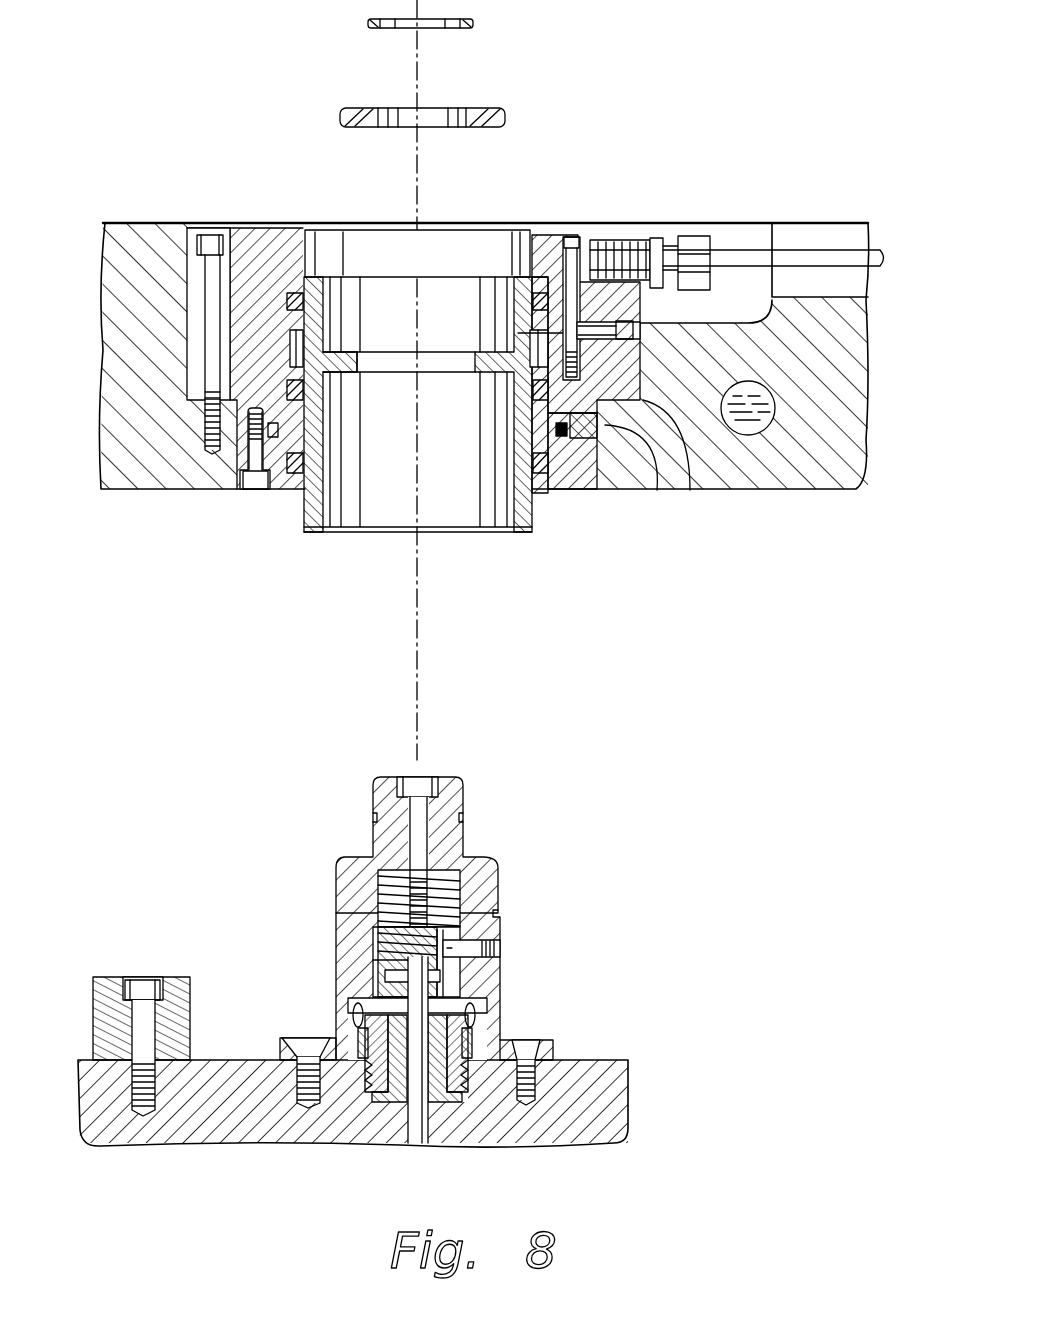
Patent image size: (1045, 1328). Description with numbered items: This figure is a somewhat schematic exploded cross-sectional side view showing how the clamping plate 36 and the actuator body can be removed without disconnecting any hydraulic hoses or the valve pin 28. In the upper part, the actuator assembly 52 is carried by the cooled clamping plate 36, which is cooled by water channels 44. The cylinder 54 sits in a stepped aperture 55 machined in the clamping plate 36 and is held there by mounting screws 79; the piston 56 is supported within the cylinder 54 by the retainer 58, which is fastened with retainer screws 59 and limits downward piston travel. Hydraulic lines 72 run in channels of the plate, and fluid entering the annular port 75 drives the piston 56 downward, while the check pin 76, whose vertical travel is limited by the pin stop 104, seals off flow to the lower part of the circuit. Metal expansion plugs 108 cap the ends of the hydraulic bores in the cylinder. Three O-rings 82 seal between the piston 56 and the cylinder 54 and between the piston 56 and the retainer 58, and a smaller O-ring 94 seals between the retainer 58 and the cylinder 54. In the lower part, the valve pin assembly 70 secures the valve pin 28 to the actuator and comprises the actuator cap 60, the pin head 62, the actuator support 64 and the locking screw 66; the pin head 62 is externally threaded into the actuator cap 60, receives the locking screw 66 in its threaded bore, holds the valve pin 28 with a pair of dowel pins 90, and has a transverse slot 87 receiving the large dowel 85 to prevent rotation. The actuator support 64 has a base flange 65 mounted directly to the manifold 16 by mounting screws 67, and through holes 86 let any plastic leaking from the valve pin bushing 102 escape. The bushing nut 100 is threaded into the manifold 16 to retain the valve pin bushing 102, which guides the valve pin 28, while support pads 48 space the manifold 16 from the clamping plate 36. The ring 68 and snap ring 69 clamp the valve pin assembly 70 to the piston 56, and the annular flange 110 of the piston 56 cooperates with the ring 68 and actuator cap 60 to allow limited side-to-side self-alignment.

The manifold 16 is at (630, 1094).
The valve pin 28 is at (412, 1132).
The clamping plate 36 is at (868, 480).
The water channels 44 is at (760, 412).
The support pads 48 is at (180, 978).
The actuator assembly 52 is at (400, 378).
The cylinder 54 is at (268, 237).
The aperture 55 is at (650, 490).
The piston 56 is at (525, 528).
The retainer 58 is at (586, 488).
The retainer screws 59 is at (257, 480).
The actuator cap 60 is at (466, 800).
The pin head 62 is at (472, 891).
The actuator support 64 is at (502, 1001).
The base flange 65 is at (556, 1047).
The locking screw 66 is at (419, 786).
The mounting screws 67 is at (313, 1038).
The ring 68 is at (505, 112).
The snap ring 69 is at (473, 23).
The valve pin assembly 70 is at (389, 961).
The hydraulic lines 72 is at (657, 258).
The annular port 75 is at (520, 335).
The check pin 76 is at (575, 360).
The mounting screws 79 is at (208, 237).
The O-rings 82 is at (541, 293).
The dowel 85 is at (462, 944).
The through holes 86 is at (468, 1010).
The transverse slot 87 is at (447, 987).
The dowel pins 90 is at (398, 977).
The O-ring 94 is at (563, 437).
The bushing nut 100 is at (467, 1067).
The valve pin bushing 102 is at (443, 1097).
The pin stop 104 is at (618, 318).
The expansion plugs 108 is at (569, 238).
The annular flange 110 is at (345, 362).